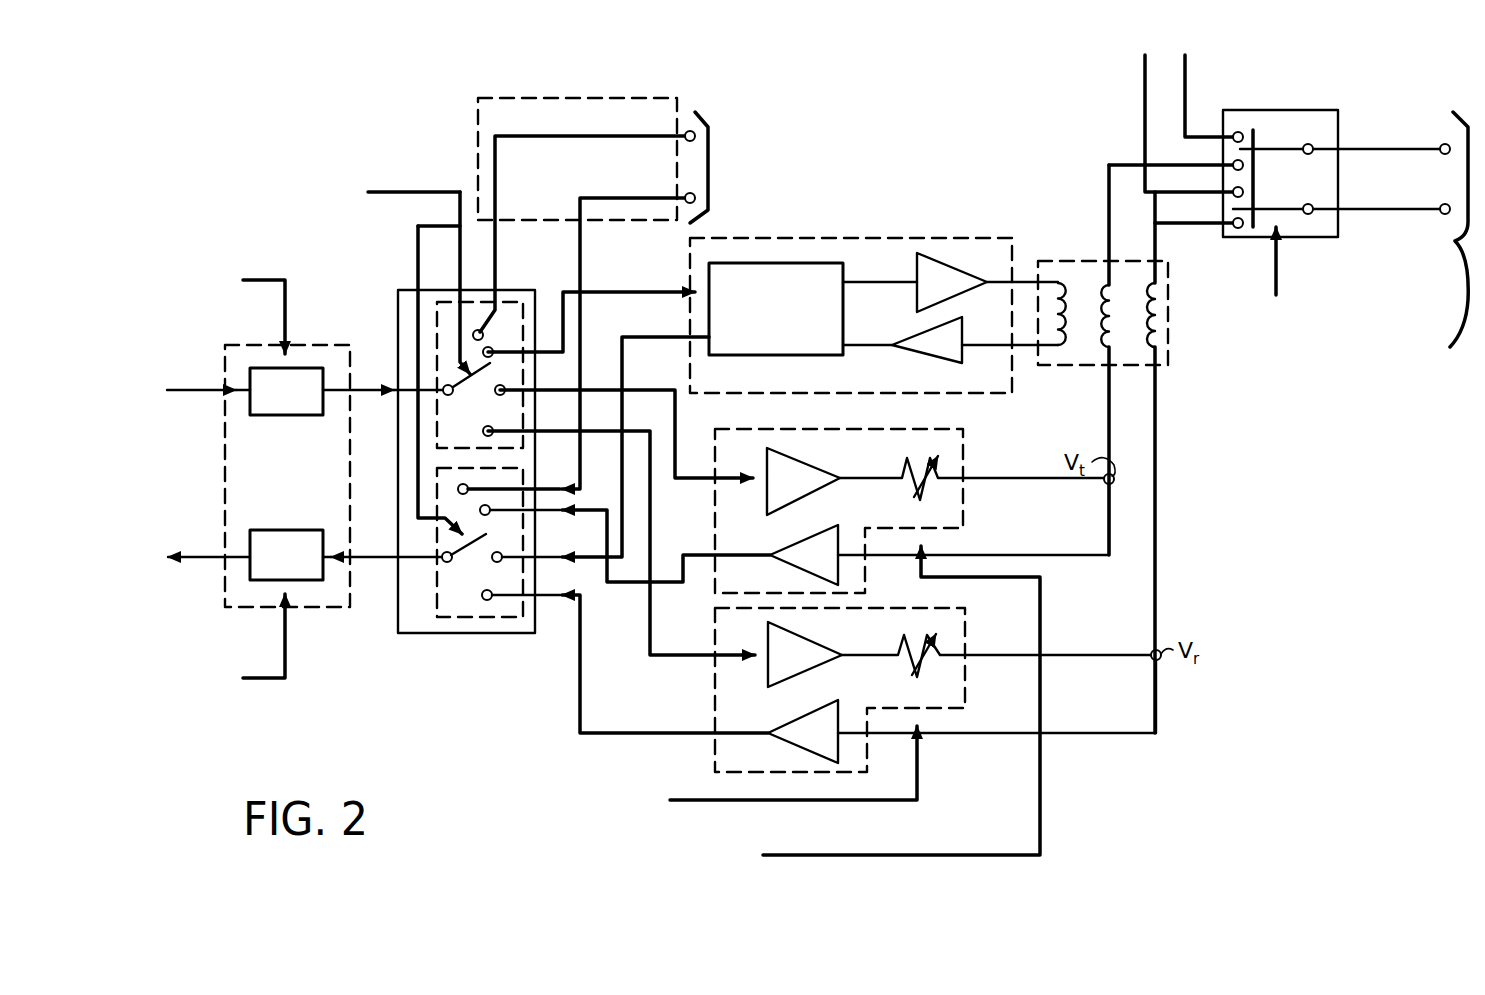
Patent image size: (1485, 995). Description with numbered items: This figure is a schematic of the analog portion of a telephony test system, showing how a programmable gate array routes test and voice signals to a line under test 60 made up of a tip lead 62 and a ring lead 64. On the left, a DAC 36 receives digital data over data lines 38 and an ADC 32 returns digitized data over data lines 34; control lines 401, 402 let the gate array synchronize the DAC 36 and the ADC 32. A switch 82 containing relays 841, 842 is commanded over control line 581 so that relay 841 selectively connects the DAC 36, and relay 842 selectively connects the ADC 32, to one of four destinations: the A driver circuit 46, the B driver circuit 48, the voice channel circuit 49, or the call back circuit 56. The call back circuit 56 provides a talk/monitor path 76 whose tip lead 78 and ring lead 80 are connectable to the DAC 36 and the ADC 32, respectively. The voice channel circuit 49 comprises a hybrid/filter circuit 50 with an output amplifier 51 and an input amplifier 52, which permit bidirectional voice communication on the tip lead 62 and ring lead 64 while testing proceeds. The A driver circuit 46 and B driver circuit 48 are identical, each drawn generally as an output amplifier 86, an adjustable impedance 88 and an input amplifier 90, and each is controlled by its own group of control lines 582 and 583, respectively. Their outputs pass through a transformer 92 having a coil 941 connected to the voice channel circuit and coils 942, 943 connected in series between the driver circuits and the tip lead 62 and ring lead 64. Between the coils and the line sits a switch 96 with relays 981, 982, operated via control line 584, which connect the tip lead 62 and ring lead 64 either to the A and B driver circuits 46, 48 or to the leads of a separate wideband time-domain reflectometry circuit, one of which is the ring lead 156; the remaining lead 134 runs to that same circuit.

The analog-to-digital converter (ADC) 32 is at (305, 580).
The data lines 34 is at (205, 560).
The digital-to-analog converter (DAC) 36 is at (307, 367).
The data lines 38 is at (203, 392).
The control line 401 is at (266, 279).
The control line 402 is at (285, 679).
The A driver circuit 46 is at (946, 428).
The B driver circuit 48 is at (946, 607).
The voice channel circuit 49 is at (925, 237).
The hybrid/filter circuit 50 is at (704, 292).
The output amplifier 51 is at (913, 279).
The input amplifier 52 is at (920, 356).
The call back circuit 56 is at (565, 98).
The control line 581 is at (390, 191).
The control lines 582 is at (1042, 826).
The control lines 583 is at (788, 806).
The control line 584 is at (1275, 272).
The line under test (LUT) 60 is at (1448, 244).
The tip lead 62 is at (1408, 153).
The ring lead 64 is at (1360, 213).
The talk/monitor path 76 is at (708, 118).
The tip lead 78 is at (478, 153).
The ring lead 80 is at (580, 248).
The switch 82 is at (490, 634).
The relay 841 is at (508, 302).
The relay 842 is at (452, 634).
The output amplifier 86 is at (765, 495).
The adjustable impedance 88 is at (933, 497).
The input amplifier 90 is at (788, 569).
The transformer 92 is at (1168, 366).
The coil 941 is at (1040, 283).
The coil 942 is at (1101, 283).
The coil 943 is at (1153, 337).
The switch 96 is at (1338, 118).
The relay 981 is at (1270, 149).
The relay 982 is at (1293, 213).
The lead to FIG. 4 134 is at (1186, 98).
The ring lead 156 is at (1143, 128).